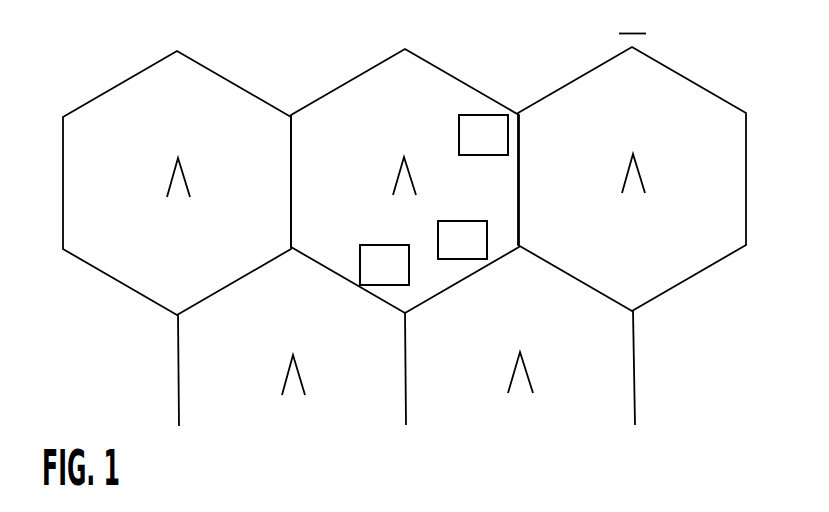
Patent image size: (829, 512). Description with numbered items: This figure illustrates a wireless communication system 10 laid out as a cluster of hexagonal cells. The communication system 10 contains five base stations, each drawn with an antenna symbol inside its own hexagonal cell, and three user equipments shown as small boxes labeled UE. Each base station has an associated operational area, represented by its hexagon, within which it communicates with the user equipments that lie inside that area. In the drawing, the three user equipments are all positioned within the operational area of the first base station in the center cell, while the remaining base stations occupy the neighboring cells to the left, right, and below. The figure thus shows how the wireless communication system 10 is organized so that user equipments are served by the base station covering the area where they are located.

The wireless communication system 10 is at (404, 216).